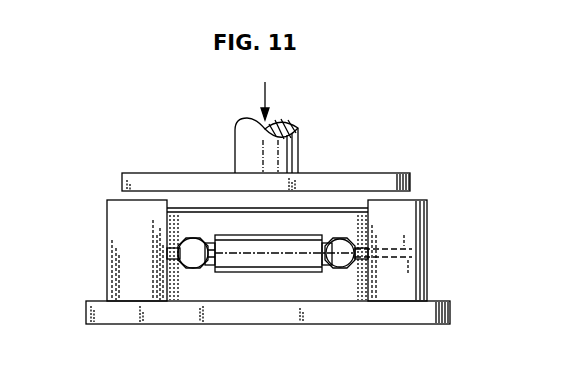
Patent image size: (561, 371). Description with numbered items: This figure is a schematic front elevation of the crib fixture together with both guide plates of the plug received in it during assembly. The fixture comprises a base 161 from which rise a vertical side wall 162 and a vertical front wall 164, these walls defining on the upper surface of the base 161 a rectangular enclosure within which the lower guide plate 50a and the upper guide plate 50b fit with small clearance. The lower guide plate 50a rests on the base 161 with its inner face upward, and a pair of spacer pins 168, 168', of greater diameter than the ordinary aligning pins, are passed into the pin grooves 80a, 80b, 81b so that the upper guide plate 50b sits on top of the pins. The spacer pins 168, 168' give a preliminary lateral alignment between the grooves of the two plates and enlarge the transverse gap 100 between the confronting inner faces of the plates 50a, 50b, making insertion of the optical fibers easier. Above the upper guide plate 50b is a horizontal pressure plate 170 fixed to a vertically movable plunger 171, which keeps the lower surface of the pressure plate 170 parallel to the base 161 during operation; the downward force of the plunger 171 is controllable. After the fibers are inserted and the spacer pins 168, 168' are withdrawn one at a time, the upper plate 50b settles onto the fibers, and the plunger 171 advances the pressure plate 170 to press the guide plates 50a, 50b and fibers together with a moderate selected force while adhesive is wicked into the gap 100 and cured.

The pressure plate 170 is at (166, 186).
The plunger 171 is at (292, 148).
The base 161 is at (284, 312).
The side wall 162 is at (107, 246).
The front wall 164 is at (134, 281).
The spacer pin 168 is at (368, 236).
The spacer pin 168' is at (166, 238).
The pin groove 80a is at (197, 270).
The pin groove 80b is at (350, 332).
The pin groove 81b is at (201, 238).
The lower guide plate 50a is at (272, 294).
The upper guide plate 50b is at (283, 230).
The transverse gap 100 is at (404, 256).